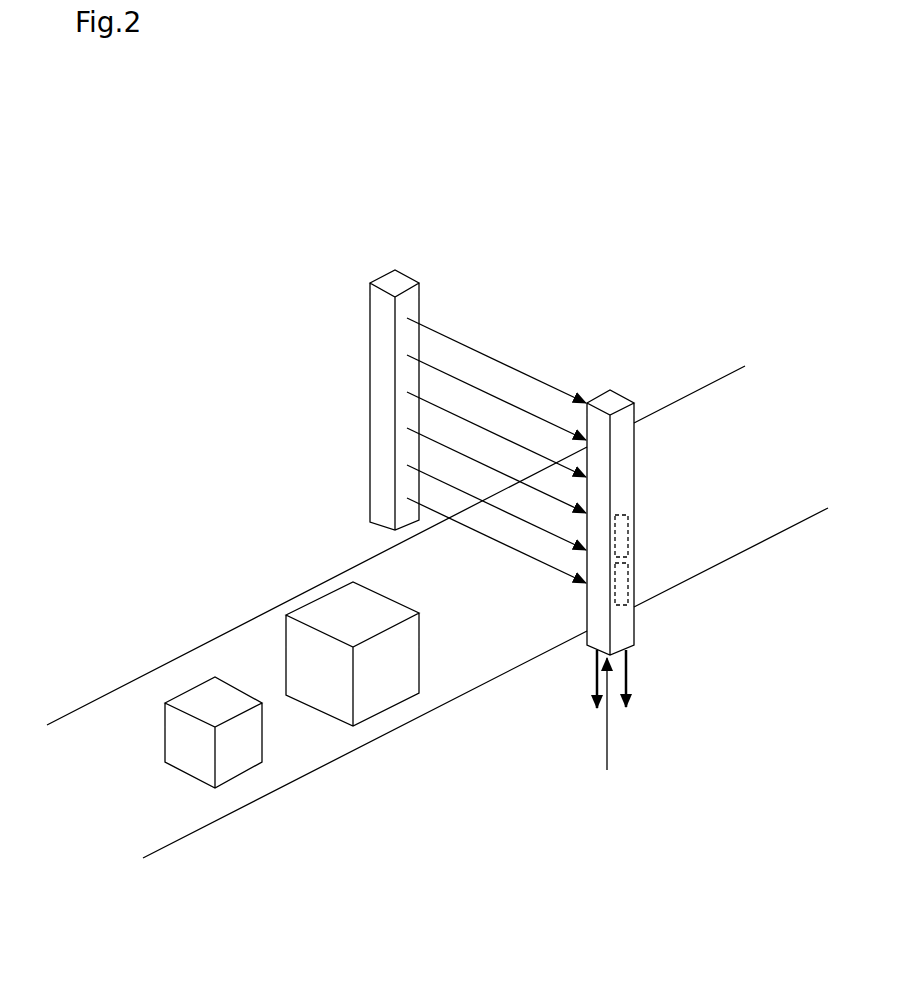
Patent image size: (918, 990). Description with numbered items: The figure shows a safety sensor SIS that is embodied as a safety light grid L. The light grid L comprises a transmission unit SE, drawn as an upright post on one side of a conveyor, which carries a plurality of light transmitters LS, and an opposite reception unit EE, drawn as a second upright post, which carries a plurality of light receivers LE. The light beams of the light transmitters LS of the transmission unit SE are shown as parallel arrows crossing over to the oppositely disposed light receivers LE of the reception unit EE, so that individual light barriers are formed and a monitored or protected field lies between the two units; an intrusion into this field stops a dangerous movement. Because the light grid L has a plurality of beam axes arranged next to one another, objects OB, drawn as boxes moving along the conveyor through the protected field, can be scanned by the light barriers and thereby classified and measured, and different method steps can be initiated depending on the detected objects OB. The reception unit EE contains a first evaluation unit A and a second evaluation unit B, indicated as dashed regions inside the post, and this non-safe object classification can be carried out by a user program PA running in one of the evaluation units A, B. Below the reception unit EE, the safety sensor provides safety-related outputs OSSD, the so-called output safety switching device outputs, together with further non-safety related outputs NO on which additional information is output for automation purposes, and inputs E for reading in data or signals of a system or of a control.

The transmission unit SE is at (383, 282).
The reception unit EE is at (625, 498).
The light transmitters LS is at (417, 388).
The light receivers LE is at (580, 432).
The safety light grid L is at (542, 203).
The safety sensor SIS is at (612, 212).
The first evaluation unit A is at (627, 527).
The second evaluation unit B is at (628, 573).
The user program PA is at (627, 593).
The objects OB is at (203, 695).
The non-safety related outputs NO is at (595, 680).
The safety-related outputs OSSD is at (627, 677).
The inputs E is at (608, 752).